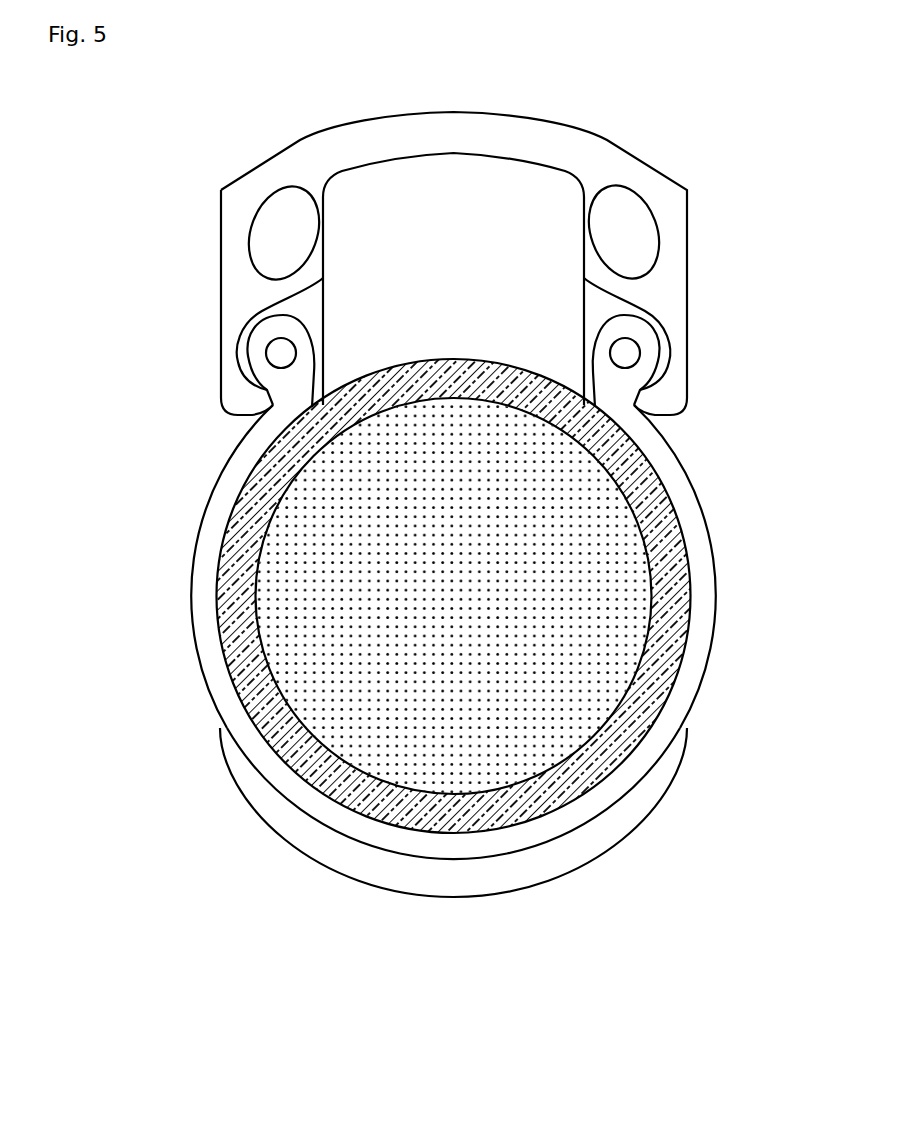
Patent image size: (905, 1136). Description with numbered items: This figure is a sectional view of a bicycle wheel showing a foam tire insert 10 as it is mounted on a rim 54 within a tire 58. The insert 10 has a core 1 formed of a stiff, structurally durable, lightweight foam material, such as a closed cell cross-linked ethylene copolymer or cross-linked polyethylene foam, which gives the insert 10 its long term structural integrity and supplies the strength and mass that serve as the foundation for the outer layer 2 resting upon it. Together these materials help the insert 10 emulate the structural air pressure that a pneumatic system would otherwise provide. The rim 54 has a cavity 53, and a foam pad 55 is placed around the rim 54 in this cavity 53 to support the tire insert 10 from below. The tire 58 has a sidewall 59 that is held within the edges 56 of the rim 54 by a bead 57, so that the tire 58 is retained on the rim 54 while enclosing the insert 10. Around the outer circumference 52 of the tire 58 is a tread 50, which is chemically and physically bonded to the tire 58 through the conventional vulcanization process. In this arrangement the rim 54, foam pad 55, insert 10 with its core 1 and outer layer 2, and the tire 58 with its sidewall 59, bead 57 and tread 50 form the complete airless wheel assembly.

The core 1 is at (548, 478).
The outer layer 2 is at (672, 525).
The insert 10 is at (220, 553).
The tread 50 is at (587, 845).
The outer circumference 52 is at (452, 860).
The cavity 53 is at (305, 308).
The rim 54 is at (652, 185).
The foam pad 55 is at (474, 277).
The edges 56 is at (240, 403).
The bead 57 is at (278, 352).
The tire 58 is at (657, 743).
The sidewall 59 is at (188, 587).